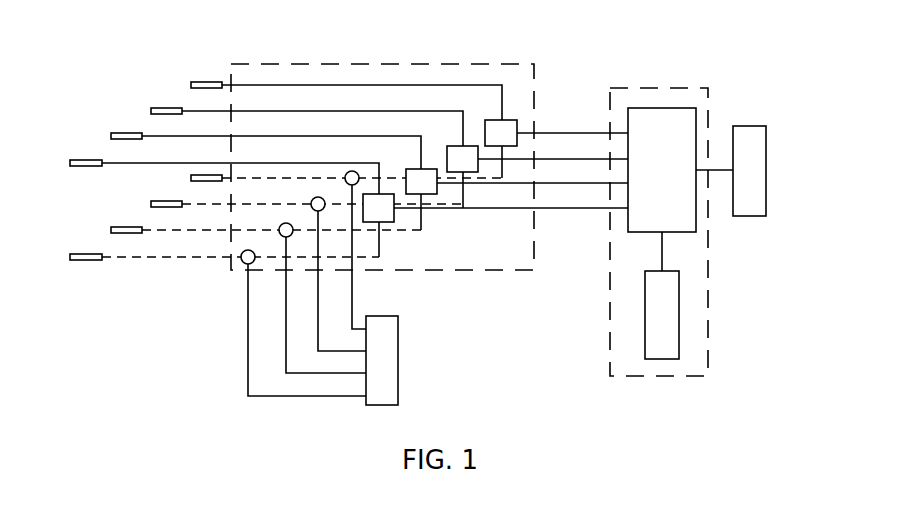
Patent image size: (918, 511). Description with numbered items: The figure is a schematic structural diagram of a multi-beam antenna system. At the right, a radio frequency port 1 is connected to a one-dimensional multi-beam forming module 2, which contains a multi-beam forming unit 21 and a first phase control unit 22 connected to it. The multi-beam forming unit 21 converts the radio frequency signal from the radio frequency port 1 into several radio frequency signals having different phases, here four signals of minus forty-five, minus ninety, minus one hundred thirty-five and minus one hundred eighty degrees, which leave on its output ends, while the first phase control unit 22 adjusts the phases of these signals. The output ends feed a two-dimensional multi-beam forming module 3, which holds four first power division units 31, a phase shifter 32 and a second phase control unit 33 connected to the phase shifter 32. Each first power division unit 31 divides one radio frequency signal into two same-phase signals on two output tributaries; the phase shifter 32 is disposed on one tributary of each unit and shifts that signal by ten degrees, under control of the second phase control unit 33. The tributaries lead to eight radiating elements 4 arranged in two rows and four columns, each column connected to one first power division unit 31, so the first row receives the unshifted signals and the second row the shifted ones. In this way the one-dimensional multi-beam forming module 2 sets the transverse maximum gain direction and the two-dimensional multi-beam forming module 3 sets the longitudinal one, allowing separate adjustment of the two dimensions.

The radio frequency port 1 is at (750, 143).
The one-dimensional multi-beam forming module 2 is at (644, 83).
The multi-beam forming unit 21 is at (660, 137).
The first phase control unit 22 is at (661, 321).
The two-dimensional multi-beam forming module 3 is at (428, 64).
The first power division unit 31 is at (502, 133).
The phase shifter 32 is at (243, 261).
The second phase control unit 33 is at (382, 360).
The radiating element 4 is at (206, 83).